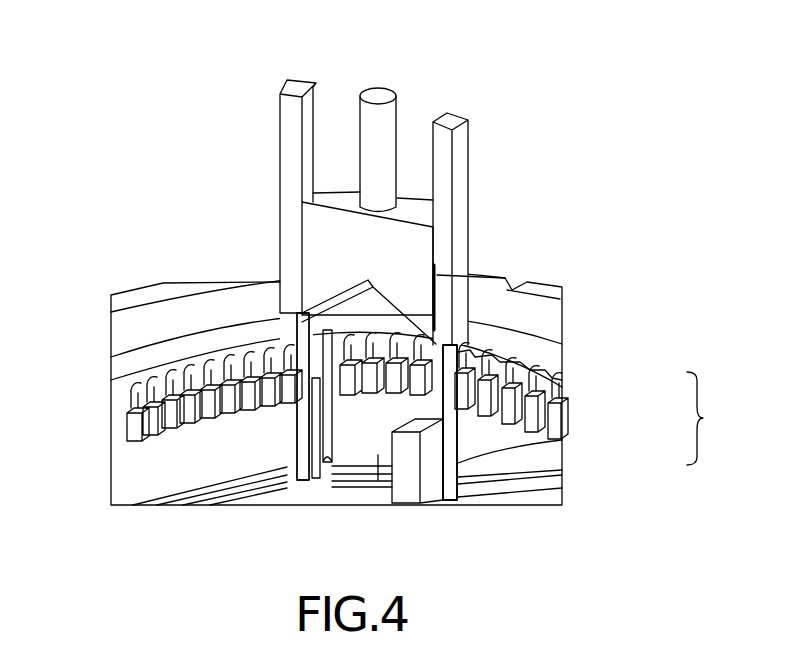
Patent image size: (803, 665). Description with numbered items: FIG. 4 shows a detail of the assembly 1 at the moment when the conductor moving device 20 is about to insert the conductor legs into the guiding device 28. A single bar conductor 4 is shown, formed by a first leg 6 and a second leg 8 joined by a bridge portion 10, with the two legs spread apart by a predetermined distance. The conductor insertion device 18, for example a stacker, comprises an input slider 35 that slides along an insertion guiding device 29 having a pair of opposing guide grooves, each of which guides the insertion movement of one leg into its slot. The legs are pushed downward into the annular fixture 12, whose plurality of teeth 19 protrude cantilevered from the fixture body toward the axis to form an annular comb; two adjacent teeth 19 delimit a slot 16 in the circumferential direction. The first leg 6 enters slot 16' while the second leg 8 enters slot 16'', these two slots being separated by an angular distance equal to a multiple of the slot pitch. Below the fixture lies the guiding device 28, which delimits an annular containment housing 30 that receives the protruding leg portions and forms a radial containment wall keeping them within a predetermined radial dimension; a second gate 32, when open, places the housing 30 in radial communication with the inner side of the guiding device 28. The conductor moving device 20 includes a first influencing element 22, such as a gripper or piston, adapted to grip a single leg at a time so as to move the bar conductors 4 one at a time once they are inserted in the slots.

The assembly 1 is at (705, 418).
The bar conductor 4 is at (316, 328).
The first leg 6 is at (332, 392).
The second leg 8 is at (513, 387).
The bridge portion 10 is at (348, 305).
The annular fixture 12 is at (560, 343).
The slot 16 is at (294, 448).
The slot 16' is at (194, 432).
The slot 16'' is at (514, 348).
The conductor insertion device 18 is at (402, 233).
The teeth 19 is at (147, 432).
The conductor moving device 20 is at (458, 451).
The first influencing element 22 is at (427, 482).
The guiding device 28 is at (458, 490).
The insertion guiding device 29 is at (292, 176).
The annular containment housing 30 is at (380, 465).
The second gate 32 is at (458, 494).
The input slider 35 is at (330, 192).